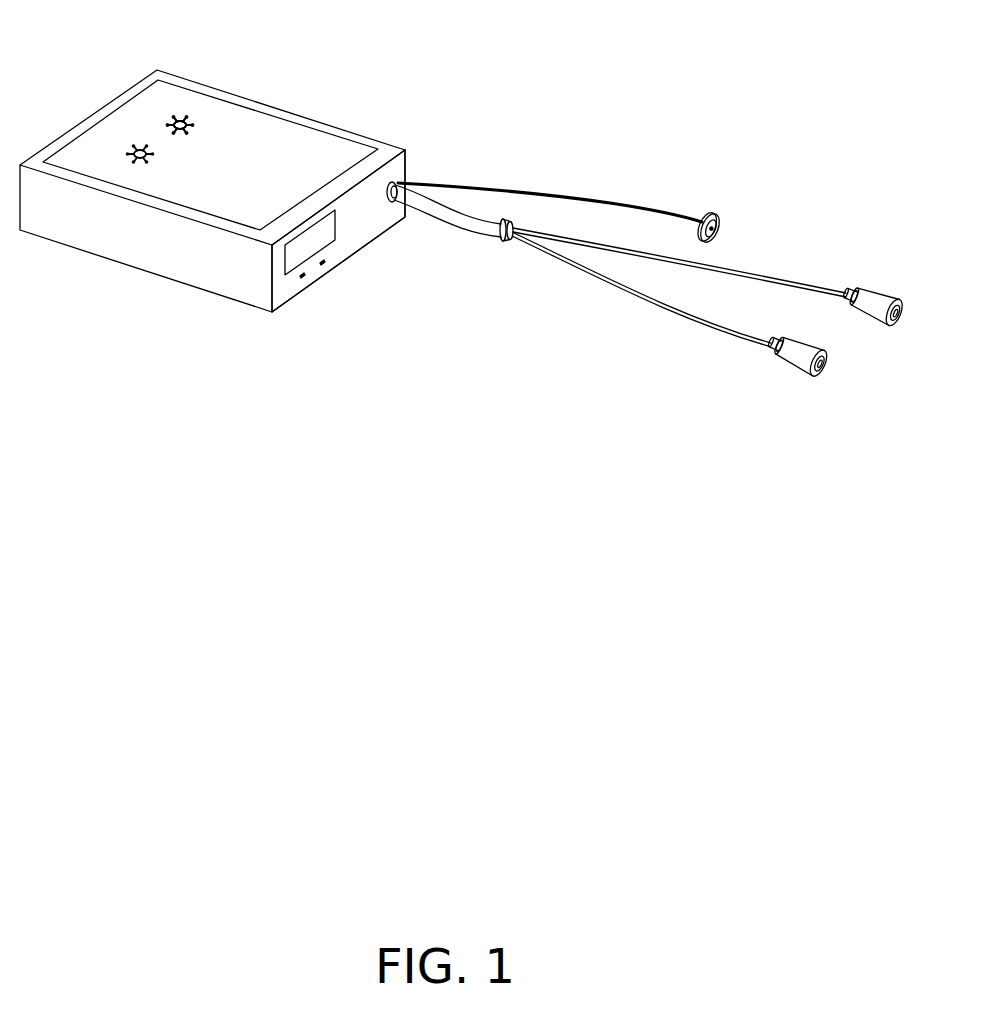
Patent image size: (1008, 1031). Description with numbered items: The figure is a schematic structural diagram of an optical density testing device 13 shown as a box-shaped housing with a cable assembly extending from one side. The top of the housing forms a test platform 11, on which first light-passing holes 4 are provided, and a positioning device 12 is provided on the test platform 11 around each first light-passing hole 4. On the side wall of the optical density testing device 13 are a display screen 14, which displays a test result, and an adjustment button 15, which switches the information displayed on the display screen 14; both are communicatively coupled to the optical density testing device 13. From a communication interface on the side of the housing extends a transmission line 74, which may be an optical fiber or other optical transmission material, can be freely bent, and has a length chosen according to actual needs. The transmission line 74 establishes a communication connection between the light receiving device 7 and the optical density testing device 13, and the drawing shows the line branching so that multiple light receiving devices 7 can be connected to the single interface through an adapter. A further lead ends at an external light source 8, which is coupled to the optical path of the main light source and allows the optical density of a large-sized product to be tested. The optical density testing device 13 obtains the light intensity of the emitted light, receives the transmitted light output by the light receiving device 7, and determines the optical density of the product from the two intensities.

The first light-passing hole 4 is at (185, 118).
The light receiving device 7 is at (882, 305).
The external light source 8 is at (713, 213).
The test platform 11 is at (265, 137).
The positioning device 12 is at (167, 122).
The optical density testing device 13 is at (367, 212).
The display screen 14 is at (318, 238).
The adjustment button 15 is at (303, 277).
The transmission line 74 is at (787, 280).